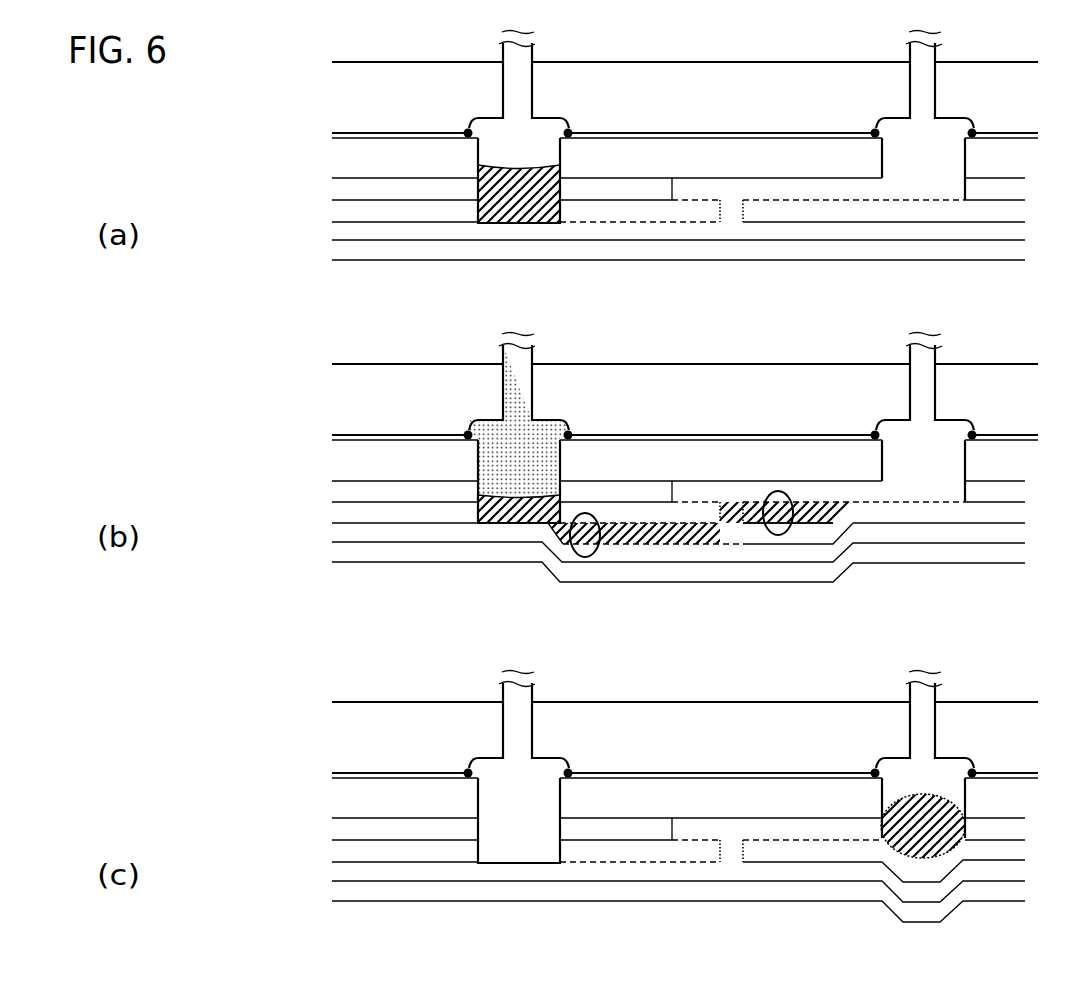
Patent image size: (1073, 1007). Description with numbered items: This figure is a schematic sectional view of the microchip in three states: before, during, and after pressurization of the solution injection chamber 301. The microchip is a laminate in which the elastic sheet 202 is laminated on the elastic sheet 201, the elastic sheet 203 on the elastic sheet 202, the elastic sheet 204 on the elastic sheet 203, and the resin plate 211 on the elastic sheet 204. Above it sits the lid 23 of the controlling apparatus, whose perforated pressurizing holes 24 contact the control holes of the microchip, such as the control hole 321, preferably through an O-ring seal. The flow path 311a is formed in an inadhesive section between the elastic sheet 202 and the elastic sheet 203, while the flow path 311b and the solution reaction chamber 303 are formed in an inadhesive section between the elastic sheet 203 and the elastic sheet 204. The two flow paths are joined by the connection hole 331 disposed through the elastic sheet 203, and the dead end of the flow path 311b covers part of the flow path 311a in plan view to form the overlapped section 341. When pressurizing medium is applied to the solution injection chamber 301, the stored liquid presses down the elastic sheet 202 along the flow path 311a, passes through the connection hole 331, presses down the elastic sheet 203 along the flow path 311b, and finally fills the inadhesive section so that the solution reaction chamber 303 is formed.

The lid 23 is at (685, 420).
The pressurizing hole 24 is at (548, 758).
The elastic sheet 201 is at (343, 895).
The elastic sheet 202 is at (337, 873).
The elastic sheet 203 is at (333, 853).
The elastic sheet 204 is at (333, 833).
The resin plate 211 is at (347, 805).
The solution injection chamber 301 is at (508, 788).
The solution reaction chamber 303 is at (915, 845).
The flow path 311a is at (593, 867).
The flow path 311b is at (792, 852).
The control hole 321 is at (917, 777).
The connection hole 331 is at (735, 853).
The overlapped section 341 is at (703, 855).